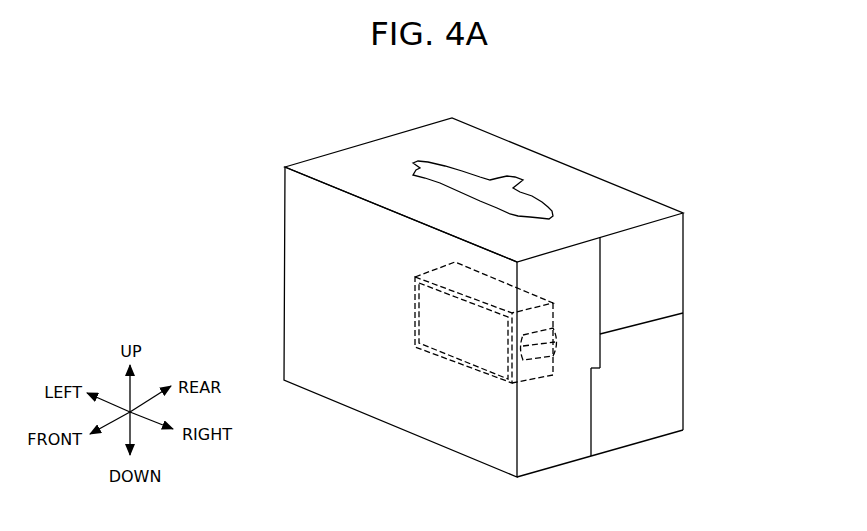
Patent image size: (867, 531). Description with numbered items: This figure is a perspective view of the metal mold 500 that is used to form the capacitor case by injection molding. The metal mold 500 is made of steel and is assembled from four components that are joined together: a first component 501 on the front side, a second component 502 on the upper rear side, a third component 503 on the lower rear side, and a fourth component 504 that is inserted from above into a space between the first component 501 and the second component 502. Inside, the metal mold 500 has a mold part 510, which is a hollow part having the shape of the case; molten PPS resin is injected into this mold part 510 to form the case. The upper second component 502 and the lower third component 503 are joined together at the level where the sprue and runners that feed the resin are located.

The metal mold 500 is at (250, 225).
The first component 501 is at (348, 165).
The second component 502 is at (600, 200).
The third component 503 is at (670, 381).
The fourth component 504 is at (461, 177).
The mold part 510 is at (413, 308).